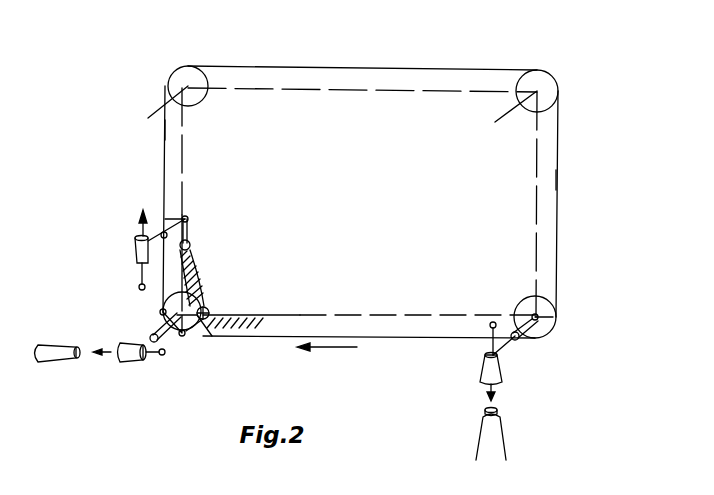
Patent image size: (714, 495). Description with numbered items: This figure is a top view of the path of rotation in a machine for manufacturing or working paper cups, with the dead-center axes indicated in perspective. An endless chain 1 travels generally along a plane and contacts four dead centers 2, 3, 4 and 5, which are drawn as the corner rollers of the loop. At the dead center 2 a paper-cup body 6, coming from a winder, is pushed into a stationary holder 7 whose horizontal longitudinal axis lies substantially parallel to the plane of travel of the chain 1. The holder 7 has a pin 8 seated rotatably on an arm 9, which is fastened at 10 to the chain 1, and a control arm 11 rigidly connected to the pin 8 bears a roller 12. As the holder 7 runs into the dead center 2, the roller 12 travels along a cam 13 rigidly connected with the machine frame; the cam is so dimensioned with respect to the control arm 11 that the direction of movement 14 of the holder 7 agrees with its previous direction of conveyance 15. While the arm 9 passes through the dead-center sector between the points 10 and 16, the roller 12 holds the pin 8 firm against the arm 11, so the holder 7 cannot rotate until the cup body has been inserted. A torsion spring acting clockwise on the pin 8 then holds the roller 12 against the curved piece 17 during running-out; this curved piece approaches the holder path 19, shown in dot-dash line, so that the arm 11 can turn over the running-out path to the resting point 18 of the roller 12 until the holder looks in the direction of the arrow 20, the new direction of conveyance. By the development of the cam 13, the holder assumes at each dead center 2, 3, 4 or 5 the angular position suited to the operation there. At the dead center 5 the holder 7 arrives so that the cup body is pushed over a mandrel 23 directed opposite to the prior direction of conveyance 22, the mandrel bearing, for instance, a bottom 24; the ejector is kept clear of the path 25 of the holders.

The chain 1 is at (357, 67).
The dead center 2 is at (198, 301).
The dead center 3 is at (198, 97).
The dead center 4 is at (549, 85).
The dead center 5 is at (542, 305).
The paper-cup body 6 is at (60, 357).
The holder 7 is at (134, 250).
The pin 8 is at (147, 341).
The arm 9 is at (185, 337).
The fastening point 10 is at (182, 337).
The control arm 11 is at (192, 334).
The roller 12 is at (209, 308).
The cam 13 is at (260, 316).
The direction of movement 14 is at (156, 358).
The direction of conveyance 15 is at (318, 350).
The point 16 is at (159, 311).
The curved piece 17 is at (192, 266).
The resting point 18 is at (189, 241).
The holder path 19 is at (186, 129).
The arrow 20 is at (136, 218).
The prior direction of conveyance 22 is at (500, 388).
The mandrel 23 is at (497, 432).
The bottom 24 is at (500, 411).
The path of the holders 25 is at (538, 186).